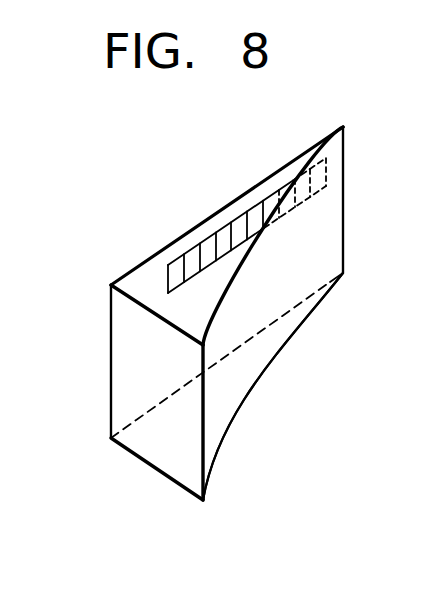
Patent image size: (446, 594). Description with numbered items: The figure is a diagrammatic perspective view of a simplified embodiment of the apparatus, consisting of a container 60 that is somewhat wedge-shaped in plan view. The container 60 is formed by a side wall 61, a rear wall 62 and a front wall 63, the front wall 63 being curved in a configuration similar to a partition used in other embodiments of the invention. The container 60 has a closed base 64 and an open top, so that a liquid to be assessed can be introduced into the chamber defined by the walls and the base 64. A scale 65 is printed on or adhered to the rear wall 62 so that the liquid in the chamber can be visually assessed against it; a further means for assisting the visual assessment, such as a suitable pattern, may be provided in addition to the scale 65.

The container 60 is at (98, 370).
The side wall 61 is at (163, 453).
The rear wall 62 is at (147, 253).
The front wall 63 is at (248, 368).
The closed base 64 is at (218, 463).
The scale 65 is at (223, 237).